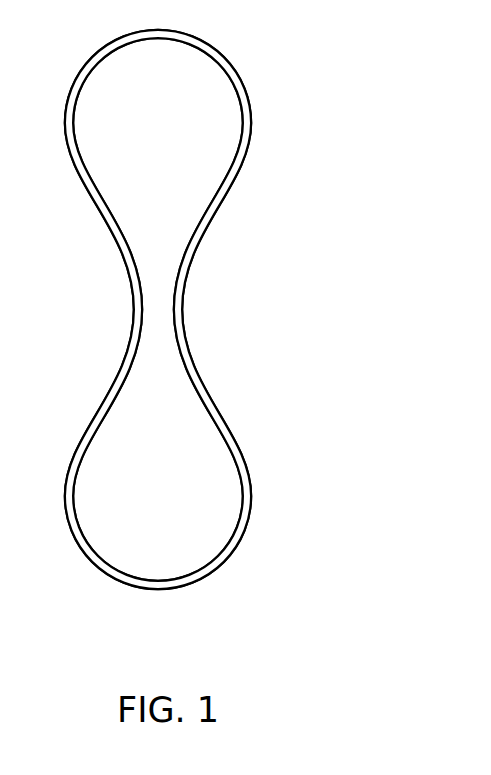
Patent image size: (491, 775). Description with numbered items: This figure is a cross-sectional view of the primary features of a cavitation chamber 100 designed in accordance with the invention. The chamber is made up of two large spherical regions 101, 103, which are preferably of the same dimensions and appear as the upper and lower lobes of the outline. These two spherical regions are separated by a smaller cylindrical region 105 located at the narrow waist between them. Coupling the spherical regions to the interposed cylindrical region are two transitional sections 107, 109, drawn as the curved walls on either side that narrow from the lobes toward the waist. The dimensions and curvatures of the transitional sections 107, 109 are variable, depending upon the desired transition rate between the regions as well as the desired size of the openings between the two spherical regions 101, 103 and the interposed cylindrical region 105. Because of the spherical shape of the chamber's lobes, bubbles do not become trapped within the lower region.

The cavitation chamber 100 is at (240, 293).
The spherical region 101 is at (180, 133).
The spherical region 103 is at (180, 507).
The cylindrical region 105 is at (159, 293).
The transitional section 107 is at (84, 309).
The transitional section 109 is at (262, 309).